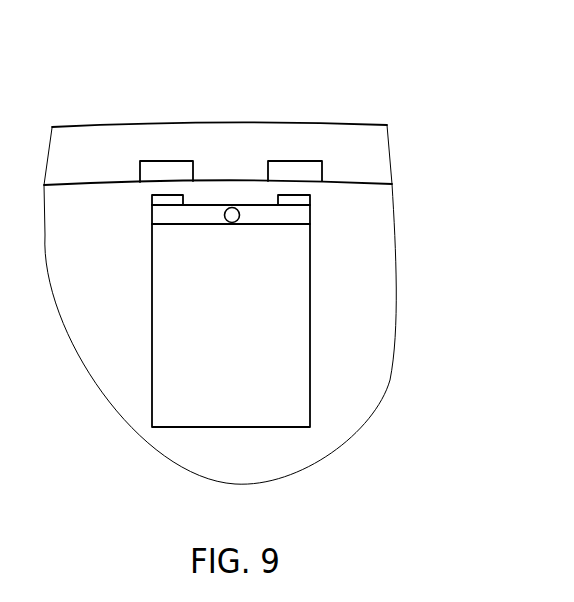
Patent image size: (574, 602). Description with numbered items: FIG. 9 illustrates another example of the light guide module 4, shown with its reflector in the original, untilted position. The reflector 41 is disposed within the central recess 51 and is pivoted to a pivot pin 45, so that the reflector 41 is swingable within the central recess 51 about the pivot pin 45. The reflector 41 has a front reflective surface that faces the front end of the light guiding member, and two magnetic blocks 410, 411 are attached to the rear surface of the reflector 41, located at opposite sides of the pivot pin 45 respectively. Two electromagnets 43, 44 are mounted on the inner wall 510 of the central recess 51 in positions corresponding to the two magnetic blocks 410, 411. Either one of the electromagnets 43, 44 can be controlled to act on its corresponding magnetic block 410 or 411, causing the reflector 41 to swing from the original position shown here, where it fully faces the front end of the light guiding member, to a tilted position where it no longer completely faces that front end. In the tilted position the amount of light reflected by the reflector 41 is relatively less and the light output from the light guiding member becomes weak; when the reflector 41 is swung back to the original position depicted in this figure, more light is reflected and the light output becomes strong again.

The light guide module 4 is at (231, 236).
The reflector 41 is at (310, 380).
The magnetic block 410 is at (308, 200).
The magnetic block 411 is at (152, 200).
The electromagnet 43 is at (295, 161).
The electromagnet 44 is at (167, 161).
The pivot pin 45 is at (232, 223).
The central recess 51 is at (375, 355).
The inner wall 510 is at (375, 163).